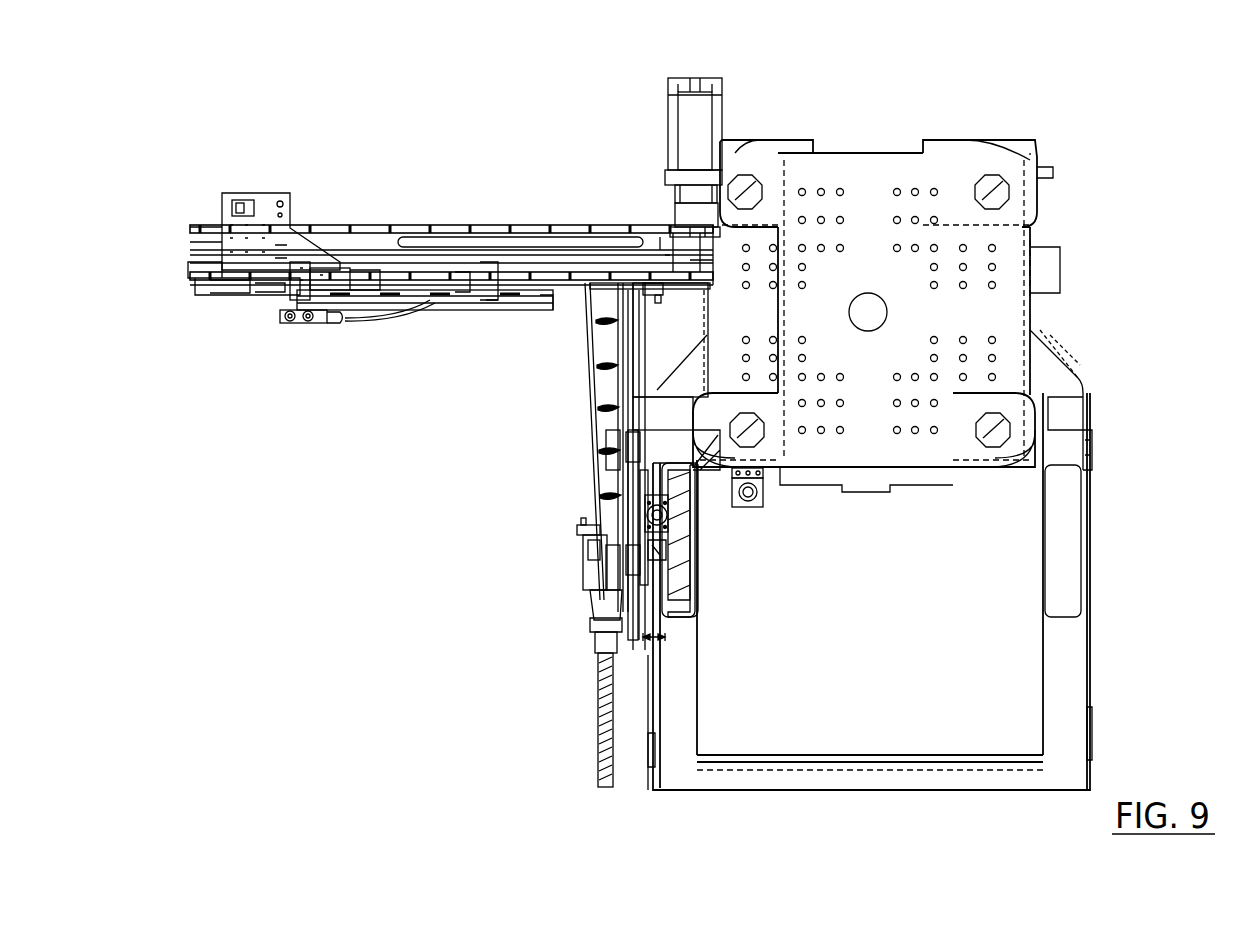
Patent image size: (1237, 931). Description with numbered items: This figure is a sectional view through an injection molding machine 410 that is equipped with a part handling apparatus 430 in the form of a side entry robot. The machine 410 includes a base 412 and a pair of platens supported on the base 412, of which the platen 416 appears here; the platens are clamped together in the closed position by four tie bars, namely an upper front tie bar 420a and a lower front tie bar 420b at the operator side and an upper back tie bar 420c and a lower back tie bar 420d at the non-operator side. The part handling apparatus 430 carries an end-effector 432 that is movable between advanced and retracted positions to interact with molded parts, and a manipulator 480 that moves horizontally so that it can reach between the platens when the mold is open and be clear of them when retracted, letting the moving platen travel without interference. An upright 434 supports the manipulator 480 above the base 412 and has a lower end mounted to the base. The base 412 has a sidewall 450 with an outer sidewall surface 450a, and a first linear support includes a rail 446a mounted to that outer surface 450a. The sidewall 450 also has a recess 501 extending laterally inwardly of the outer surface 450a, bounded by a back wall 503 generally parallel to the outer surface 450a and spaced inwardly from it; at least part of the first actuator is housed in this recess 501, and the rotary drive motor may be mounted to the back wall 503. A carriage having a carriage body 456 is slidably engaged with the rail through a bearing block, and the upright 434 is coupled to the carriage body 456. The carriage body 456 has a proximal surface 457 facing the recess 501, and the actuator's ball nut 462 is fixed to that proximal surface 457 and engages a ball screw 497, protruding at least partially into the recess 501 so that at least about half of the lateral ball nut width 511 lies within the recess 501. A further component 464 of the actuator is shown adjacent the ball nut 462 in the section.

The injection molding machine 410 is at (1040, 76).
The base 412 is at (852, 716).
The platen 416 is at (1003, 311).
The upper front tie bar 420a is at (995, 195).
The lower front tie bar 420b is at (1005, 432).
The upper back tie bar 420c is at (748, 188).
The lower back tie bar 420d is at (750, 433).
The part handling apparatus 430 is at (437, 152).
The end-effector 432 is at (303, 262).
The upright 434 is at (590, 392).
The rail 446a is at (620, 446).
The sidewall 450 is at (664, 686).
The outer sidewall surface 450a is at (646, 433).
The carriage body 456 is at (615, 475).
The proximal surface 457 is at (637, 483).
The ball nut 462 is at (668, 532).
The bearing 464 is at (665, 515).
The manipulator 480 is at (252, 311).
The lead screw 497 is at (600, 727).
The recess 501 is at (622, 547).
The back wall 503 is at (590, 582).
The ball nut width 511 is at (615, 675).